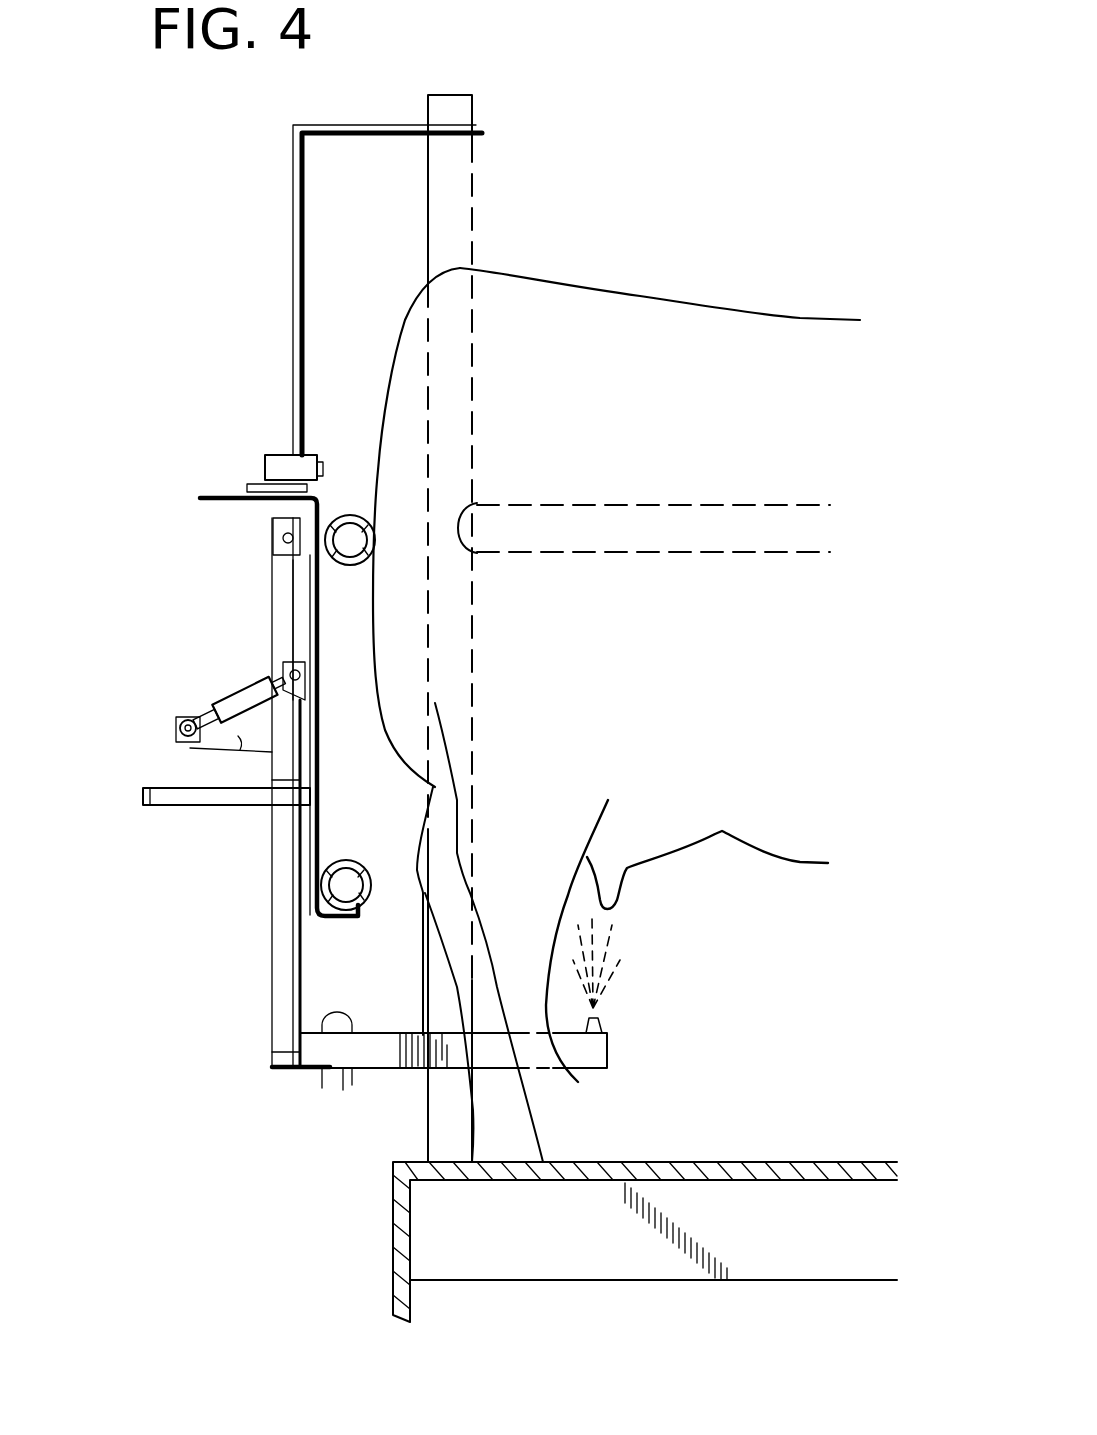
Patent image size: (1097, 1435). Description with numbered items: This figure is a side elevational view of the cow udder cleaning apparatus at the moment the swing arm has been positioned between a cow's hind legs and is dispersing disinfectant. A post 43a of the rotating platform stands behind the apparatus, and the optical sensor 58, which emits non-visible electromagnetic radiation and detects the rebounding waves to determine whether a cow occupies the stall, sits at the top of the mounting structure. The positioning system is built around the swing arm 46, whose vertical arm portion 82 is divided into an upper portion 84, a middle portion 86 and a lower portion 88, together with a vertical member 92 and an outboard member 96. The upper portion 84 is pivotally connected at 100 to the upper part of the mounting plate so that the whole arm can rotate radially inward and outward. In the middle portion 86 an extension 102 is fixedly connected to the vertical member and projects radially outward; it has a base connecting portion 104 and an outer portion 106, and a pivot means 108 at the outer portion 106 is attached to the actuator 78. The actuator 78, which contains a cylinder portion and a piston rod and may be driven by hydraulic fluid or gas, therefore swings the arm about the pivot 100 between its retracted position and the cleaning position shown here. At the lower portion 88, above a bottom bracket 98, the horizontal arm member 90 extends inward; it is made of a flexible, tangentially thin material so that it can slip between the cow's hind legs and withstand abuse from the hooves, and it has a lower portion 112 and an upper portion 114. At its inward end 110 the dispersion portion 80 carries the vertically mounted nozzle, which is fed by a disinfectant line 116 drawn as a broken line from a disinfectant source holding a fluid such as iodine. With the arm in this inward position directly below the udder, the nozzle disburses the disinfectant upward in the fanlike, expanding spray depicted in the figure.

The post 43a is at (462, 207).
The optical sensor 58 is at (283, 457).
The pivotal connection 100 is at (270, 525).
The upper portion 84 is at (275, 562).
The actuator 78 is at (250, 683).
The pivot means 108 is at (185, 715).
The outer portion 106 is at (180, 730).
The extension 102 is at (235, 745).
The base connecting portion 104 is at (265, 752).
The middle portion 86 is at (275, 782).
The horizontal arm 96 is at (280, 822).
The vertical arm portion 82 is at (280, 853).
The vertical member 92 is at (280, 898).
The swing arm 46 is at (278, 953).
The lower portion 88 is at (278, 1030).
The bottom bracket 98 is at (272, 1052).
The upper portion 114 is at (322, 1085).
The horizontal arm member 90 is at (338, 1085).
The lower portion 112 is at (355, 1085).
The disinfectant line 116 is at (597, 1012).
The dispersion portion 80 is at (600, 1022).
The inward end 110 is at (595, 1048).